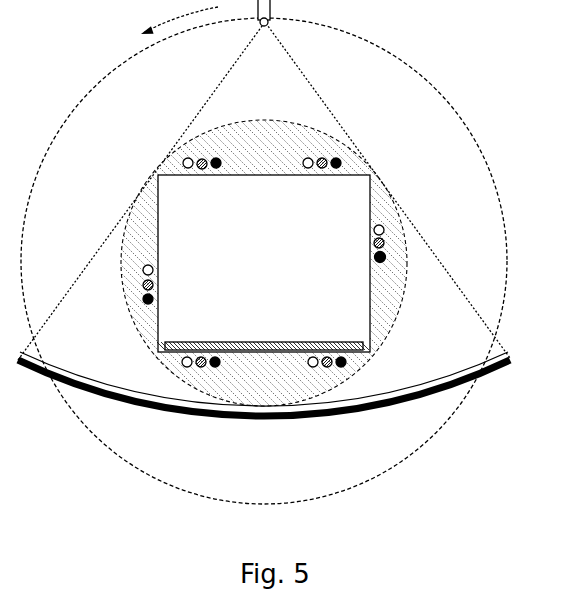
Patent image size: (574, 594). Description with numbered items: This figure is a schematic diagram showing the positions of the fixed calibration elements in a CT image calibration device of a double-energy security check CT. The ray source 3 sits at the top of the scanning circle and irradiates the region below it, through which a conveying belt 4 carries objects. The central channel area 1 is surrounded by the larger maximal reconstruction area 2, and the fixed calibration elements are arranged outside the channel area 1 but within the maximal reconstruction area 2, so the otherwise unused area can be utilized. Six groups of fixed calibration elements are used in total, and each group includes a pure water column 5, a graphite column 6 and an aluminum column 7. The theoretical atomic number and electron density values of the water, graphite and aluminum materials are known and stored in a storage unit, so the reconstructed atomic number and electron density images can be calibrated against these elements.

The channel area 1 is at (225, 190).
The maximal reconstruction area 2 is at (392, 280).
The ray source 3 is at (275, 6).
The conveying belt 4 is at (343, 367).
The pure water column 5 is at (383, 226).
The graphite column 6 is at (414, 235).
The aluminum column 7 is at (402, 253).